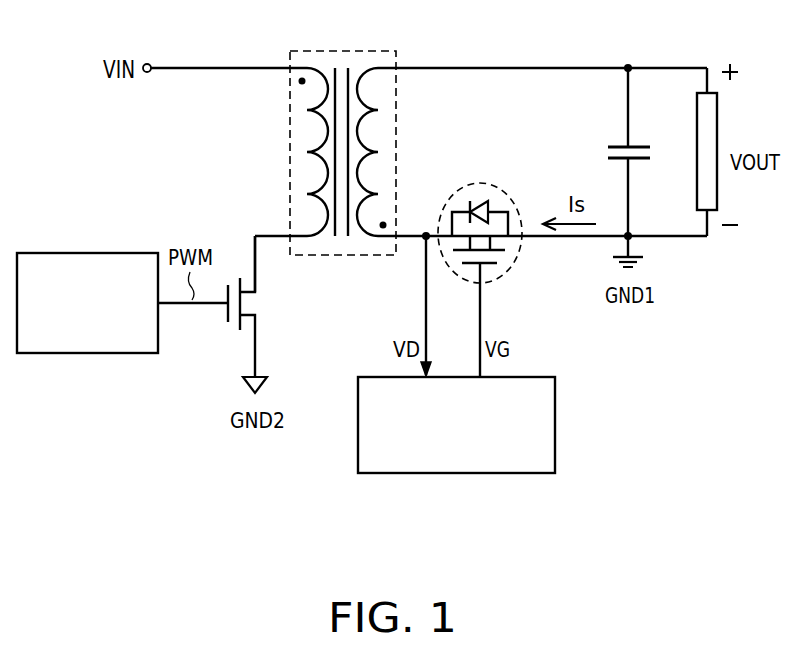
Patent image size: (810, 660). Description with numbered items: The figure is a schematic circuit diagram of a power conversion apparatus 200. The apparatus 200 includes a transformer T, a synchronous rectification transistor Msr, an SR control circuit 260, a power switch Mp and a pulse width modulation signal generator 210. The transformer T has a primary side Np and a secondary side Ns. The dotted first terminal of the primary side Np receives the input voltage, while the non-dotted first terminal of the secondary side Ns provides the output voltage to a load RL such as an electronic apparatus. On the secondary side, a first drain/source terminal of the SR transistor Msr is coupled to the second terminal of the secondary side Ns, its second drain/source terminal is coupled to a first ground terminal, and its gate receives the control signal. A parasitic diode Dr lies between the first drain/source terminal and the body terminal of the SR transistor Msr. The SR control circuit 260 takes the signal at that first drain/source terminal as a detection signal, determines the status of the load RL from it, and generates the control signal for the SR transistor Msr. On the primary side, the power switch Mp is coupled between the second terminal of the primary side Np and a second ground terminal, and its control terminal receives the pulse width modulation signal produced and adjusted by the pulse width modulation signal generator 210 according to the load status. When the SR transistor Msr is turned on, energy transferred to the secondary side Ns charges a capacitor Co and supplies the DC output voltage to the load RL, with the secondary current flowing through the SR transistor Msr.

The power conversion apparatus 200 is at (748, 524).
The pulse width modulation signal generator 210 is at (87, 253).
The SR control circuit 260 is at (555, 424).
The transformer T is at (344, 133).
The primary side Np is at (310, 132).
The secondary side Ns is at (377, 135).
The power switch Mp is at (260, 306).
The synchronous rectification transistor Msr is at (485, 256).
The parasitic diode Dr is at (480, 198).
The capacitor Co is at (614, 152).
The load RL is at (697, 118).